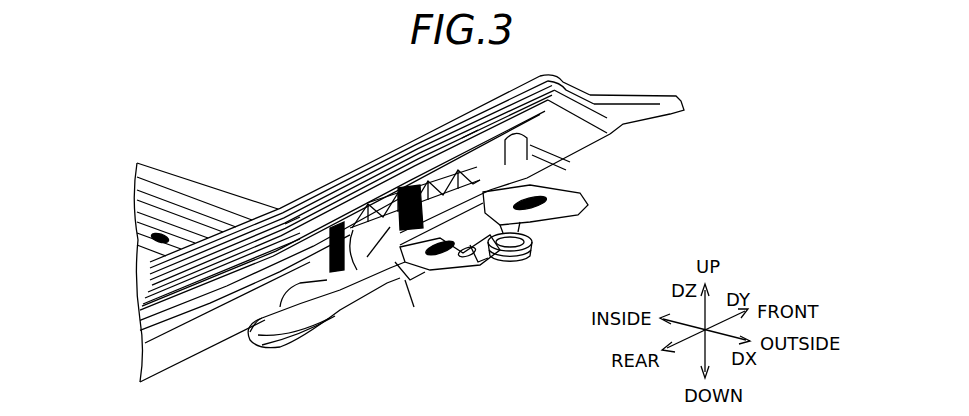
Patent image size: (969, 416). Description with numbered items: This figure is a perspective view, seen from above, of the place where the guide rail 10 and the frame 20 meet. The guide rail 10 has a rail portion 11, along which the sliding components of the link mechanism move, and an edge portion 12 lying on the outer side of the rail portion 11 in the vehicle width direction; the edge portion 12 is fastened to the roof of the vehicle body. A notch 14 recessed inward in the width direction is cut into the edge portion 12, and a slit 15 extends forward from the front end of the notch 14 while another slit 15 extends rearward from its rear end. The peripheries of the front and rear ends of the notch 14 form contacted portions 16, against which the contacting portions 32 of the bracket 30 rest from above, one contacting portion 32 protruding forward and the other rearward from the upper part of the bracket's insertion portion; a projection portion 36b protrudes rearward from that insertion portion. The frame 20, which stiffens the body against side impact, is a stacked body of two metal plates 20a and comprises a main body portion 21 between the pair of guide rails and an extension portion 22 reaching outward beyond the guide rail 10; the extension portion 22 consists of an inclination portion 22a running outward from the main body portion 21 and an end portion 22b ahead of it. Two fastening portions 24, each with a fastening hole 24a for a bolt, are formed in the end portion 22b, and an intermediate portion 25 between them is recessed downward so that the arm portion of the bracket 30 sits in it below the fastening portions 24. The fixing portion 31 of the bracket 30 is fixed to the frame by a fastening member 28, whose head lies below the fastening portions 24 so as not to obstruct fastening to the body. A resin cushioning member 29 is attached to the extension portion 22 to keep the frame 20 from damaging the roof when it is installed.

The guide rail 10 is at (696, 85).
The rail portion 11 is at (507, 100).
The edge portion 12 is at (670, 115).
The notch 14 is at (323, 265).
The slit 15 is at (540, 168).
The contacted portion 16 is at (552, 173).
The frame 20 is at (173, 160).
The main body portion 21 is at (208, 187).
The extension portion 22 is at (282, 360).
The inclination portion 22a is at (312, 336).
The end portion 22b is at (414, 307).
The metal plate 20a is at (423, 295).
The fastening portion 24 is at (443, 263).
The fastening hole 24a is at (467, 258).
The intermediate portion 25 is at (480, 257).
The fastening member 28 is at (537, 237).
The cushioning member 29 is at (250, 332).
The bracket 30 is at (400, 170).
The fixing portion 31 is at (535, 263).
The contacting portion 32 is at (288, 203).
The projection portion 36b is at (160, 240).